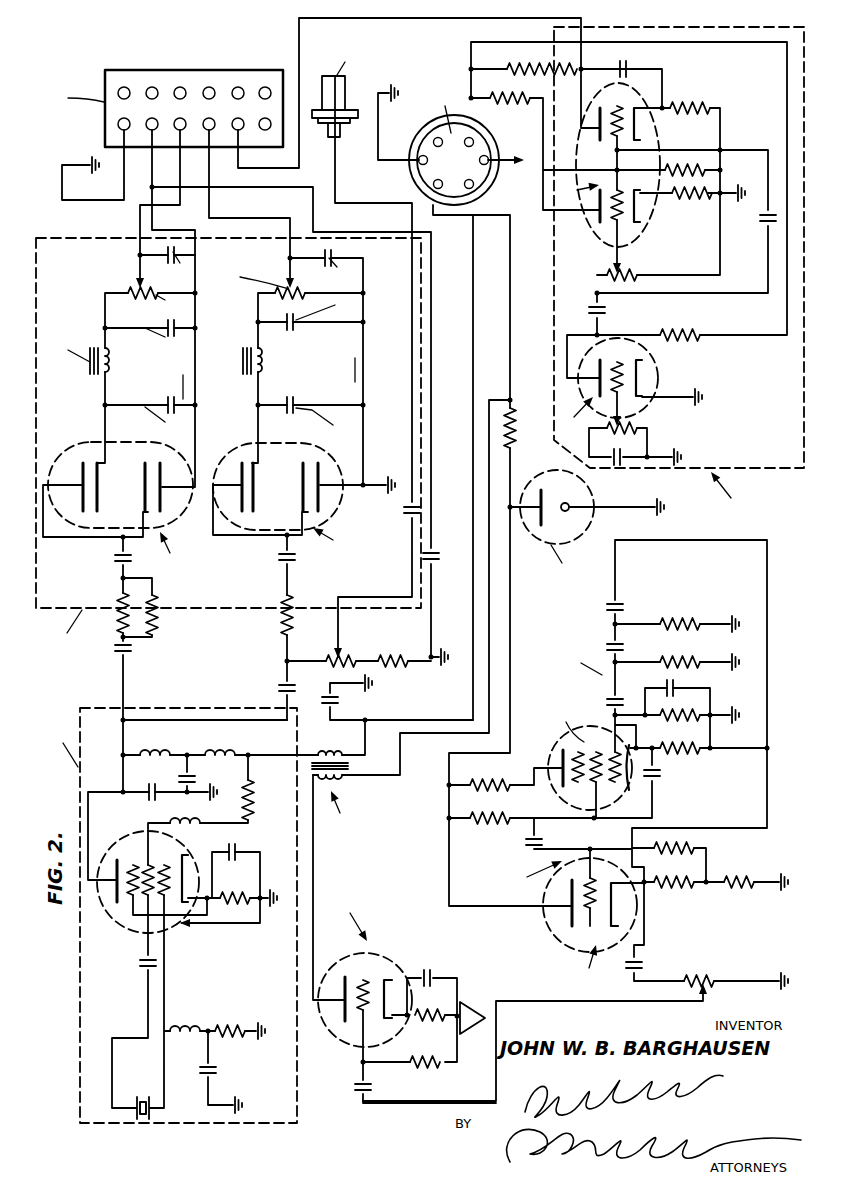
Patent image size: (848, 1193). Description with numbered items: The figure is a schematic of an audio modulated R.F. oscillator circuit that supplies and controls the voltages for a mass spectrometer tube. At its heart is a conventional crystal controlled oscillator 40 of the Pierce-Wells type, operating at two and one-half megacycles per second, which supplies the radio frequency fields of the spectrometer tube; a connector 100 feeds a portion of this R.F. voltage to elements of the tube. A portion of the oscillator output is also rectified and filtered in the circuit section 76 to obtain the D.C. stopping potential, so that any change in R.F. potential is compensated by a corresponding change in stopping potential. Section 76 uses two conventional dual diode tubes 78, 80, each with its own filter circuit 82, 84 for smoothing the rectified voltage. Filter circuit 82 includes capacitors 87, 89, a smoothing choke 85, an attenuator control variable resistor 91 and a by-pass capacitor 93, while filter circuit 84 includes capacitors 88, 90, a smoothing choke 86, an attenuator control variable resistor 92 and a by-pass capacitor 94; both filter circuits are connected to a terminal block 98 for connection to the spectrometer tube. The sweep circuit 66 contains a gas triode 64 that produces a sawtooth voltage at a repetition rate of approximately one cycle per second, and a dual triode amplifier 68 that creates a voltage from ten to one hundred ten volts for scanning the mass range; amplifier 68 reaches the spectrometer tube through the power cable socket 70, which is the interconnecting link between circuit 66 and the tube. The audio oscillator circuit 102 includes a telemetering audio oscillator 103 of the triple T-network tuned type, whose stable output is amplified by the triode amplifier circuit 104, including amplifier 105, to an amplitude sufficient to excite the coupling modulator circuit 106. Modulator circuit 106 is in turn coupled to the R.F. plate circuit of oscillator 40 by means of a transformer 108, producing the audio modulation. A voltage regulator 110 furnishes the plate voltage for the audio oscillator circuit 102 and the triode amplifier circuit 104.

The terminal block 98 is at (167, 79).
The connector 100 is at (335, 86).
The power cable socket 70 is at (466, 144).
The dual triode amplifier 68 is at (610, 165).
The circuit 66 is at (637, 273).
The gas triode 64 is at (608, 384).
The voltage regulator 110 is at (586, 529).
The audio oscillator circuit 102 is at (575, 820).
The telemetering audio oscillator 103 is at (590, 751).
The triode amplifier circuit 104 is at (574, 904).
The amplifier 105 is at (592, 951).
The coupling modulator circuit 106 is at (404, 939).
The transformer 108 is at (306, 780).
The crystal controlled oscillator 40 is at (185, 915).
The circuit section 76 is at (228, 446).
The dual diode tube 78 is at (120, 508).
The dual diode tube 80 is at (283, 500).
The filter circuit 82 is at (137, 373).
The filter circuit 84 is at (347, 370).
The smoothing choke 85 is at (70, 353).
The smoothing choke 86 is at (227, 359).
The capacitor 87 is at (164, 423).
The capacitor 88 is at (325, 424).
The capacitor 89 is at (164, 341).
The capacitor 90 is at (326, 309).
The attenuator control variable resistor 91 is at (156, 305).
The attenuator control variable resistor 92 is at (254, 274).
The by-pass capacitor 93 is at (177, 266).
The by-pass capacitor 94 is at (342, 271).